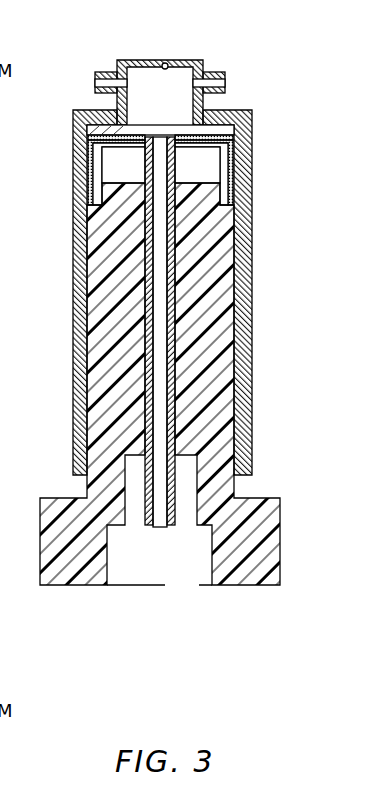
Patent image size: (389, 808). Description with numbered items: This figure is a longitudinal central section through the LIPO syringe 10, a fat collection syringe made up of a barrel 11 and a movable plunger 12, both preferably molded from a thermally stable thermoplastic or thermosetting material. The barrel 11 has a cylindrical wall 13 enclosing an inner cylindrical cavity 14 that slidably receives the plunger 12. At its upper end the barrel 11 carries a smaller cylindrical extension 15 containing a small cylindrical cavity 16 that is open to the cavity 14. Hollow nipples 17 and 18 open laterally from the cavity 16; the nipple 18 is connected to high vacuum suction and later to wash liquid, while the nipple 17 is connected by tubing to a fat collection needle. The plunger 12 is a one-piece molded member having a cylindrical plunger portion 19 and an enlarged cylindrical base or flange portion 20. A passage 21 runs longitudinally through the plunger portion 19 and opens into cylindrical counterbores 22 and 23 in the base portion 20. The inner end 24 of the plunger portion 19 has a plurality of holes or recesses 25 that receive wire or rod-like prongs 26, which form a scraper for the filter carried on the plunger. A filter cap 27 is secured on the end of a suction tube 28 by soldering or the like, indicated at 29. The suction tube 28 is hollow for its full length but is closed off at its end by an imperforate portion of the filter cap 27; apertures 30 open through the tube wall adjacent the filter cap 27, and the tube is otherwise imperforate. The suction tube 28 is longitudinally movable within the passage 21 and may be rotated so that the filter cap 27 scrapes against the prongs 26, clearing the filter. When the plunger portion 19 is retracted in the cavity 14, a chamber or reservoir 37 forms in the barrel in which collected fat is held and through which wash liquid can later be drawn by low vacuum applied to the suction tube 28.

The LIPO syringe 10 is at (266, 302).
The barrel 11 is at (254, 214).
The plunger 12 is at (282, 521).
The cylindrical wall 13 is at (82, 312).
The inner cylindrical cavity 14 is at (92, 358).
The cylindrical extension 15 is at (119, 60).
The small cylindrical cavity 16 is at (161, 62).
The hollow nipple 17 is at (98, 73).
The hollow nipple 18 is at (218, 72).
The plunger portion 19 is at (100, 245).
The base portion 20 is at (63, 525).
The passage 21 is at (169, 353).
The counterbore 22 is at (127, 497).
The counterbore 23 is at (208, 554).
The inner end 24 is at (95, 153).
The holes or recesses 25 is at (100, 187).
The prongs 26 is at (88, 134).
The filter cap 27 is at (193, 130).
The suction tube 28 is at (173, 499).
The solder joint 29 is at (139, 136).
The apertures 30 is at (172, 160).
The reservoir 37 is at (107, 127).